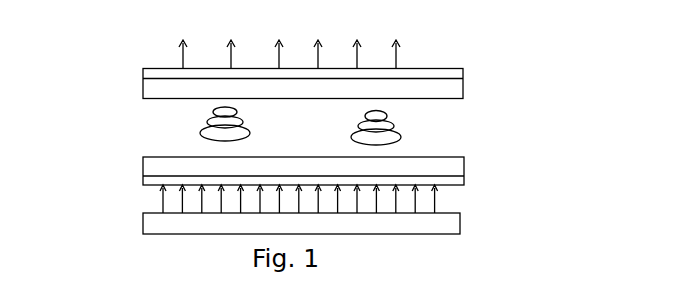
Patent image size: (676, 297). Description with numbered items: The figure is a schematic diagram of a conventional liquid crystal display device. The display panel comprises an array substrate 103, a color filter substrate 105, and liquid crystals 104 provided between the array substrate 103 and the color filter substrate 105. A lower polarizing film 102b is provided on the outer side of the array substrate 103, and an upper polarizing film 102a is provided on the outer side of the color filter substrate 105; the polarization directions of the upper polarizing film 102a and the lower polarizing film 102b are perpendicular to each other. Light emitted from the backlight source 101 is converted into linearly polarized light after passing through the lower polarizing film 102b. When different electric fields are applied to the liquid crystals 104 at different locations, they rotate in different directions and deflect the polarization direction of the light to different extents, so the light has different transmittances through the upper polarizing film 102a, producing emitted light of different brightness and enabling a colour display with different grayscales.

The backlight source 101 is at (423, 221).
The upper polarizing film 102a is at (148, 71).
The lower polarizing film 102b is at (433, 180).
The array substrate 103 is at (390, 166).
The liquid crystals 104 is at (207, 123).
The color filter substrate 105 is at (442, 88).